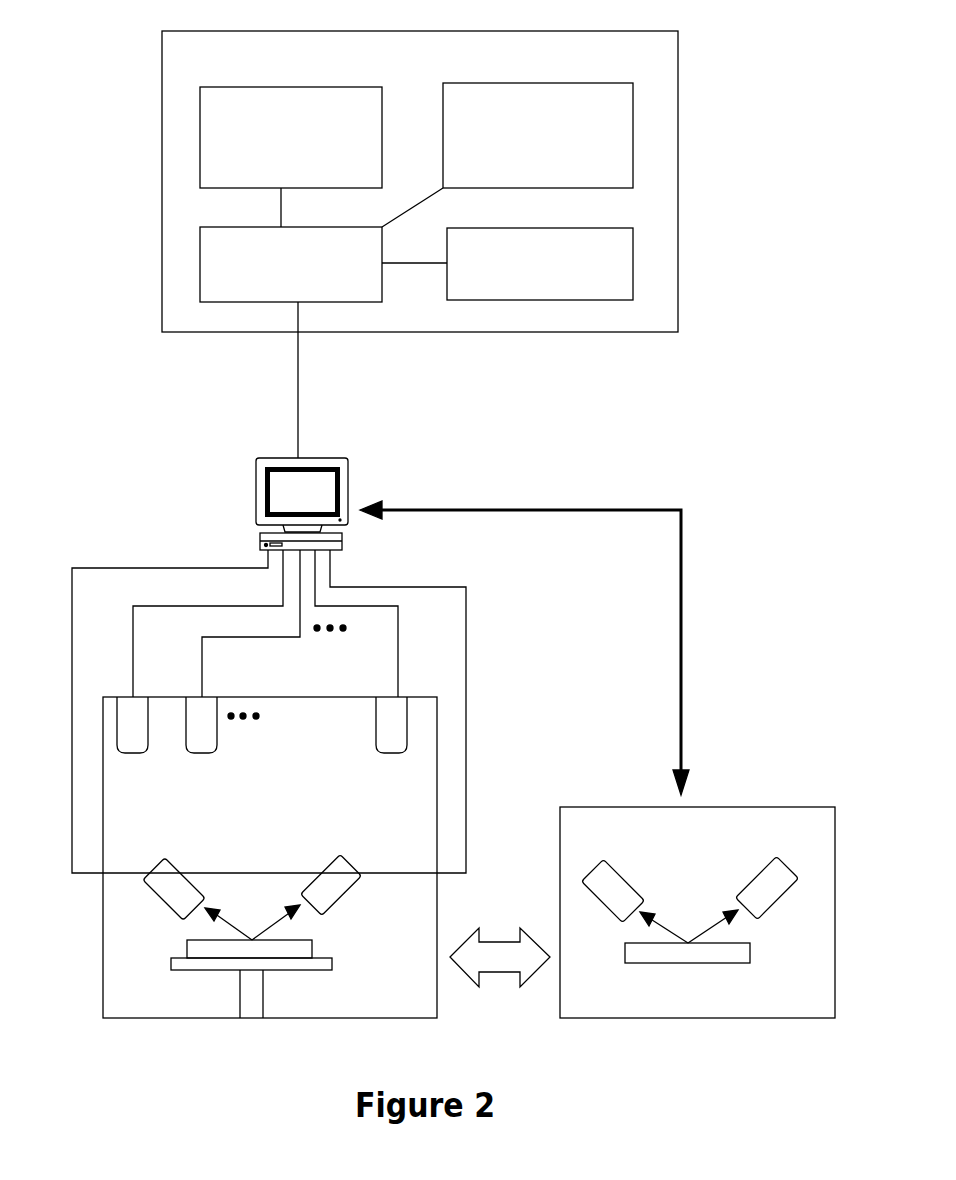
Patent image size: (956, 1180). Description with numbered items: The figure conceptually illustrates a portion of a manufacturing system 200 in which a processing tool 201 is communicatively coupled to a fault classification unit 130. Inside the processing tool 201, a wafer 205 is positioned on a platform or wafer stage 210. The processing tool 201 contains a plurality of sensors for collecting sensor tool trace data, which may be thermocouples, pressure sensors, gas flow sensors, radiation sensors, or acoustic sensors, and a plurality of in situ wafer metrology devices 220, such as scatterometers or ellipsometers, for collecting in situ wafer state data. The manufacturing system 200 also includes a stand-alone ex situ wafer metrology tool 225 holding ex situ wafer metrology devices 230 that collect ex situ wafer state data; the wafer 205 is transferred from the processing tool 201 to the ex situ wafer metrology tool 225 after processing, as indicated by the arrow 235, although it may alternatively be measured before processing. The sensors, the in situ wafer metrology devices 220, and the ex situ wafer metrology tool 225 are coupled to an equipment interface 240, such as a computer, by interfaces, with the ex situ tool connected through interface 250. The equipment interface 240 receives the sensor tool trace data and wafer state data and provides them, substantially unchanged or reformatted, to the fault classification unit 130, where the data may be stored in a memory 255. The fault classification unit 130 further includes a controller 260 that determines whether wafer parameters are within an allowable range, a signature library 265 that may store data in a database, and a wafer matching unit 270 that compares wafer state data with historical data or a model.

The manufacturing system 200 is at (728, 57).
The fault classification unit 130 is at (643, 67).
The wafer matching unit 270 is at (276, 174).
The signature library 265 is at (523, 167).
The controller 260 is at (276, 291).
The memory 255 is at (525, 290).
The equipment interface 240 is at (256, 503).
The interface 250 is at (681, 588).
The processing tool 201 is at (207, 1018).
The in situ wafer metrology device 220 is at (180, 866).
The wafer 205 is at (312, 950).
The wafer stage 210 is at (290, 970).
The arrow 235 is at (503, 972).
The ex situ wafer metrology tool 225 is at (665, 1018).
The ex situ wafer metrology device 230 is at (612, 868).